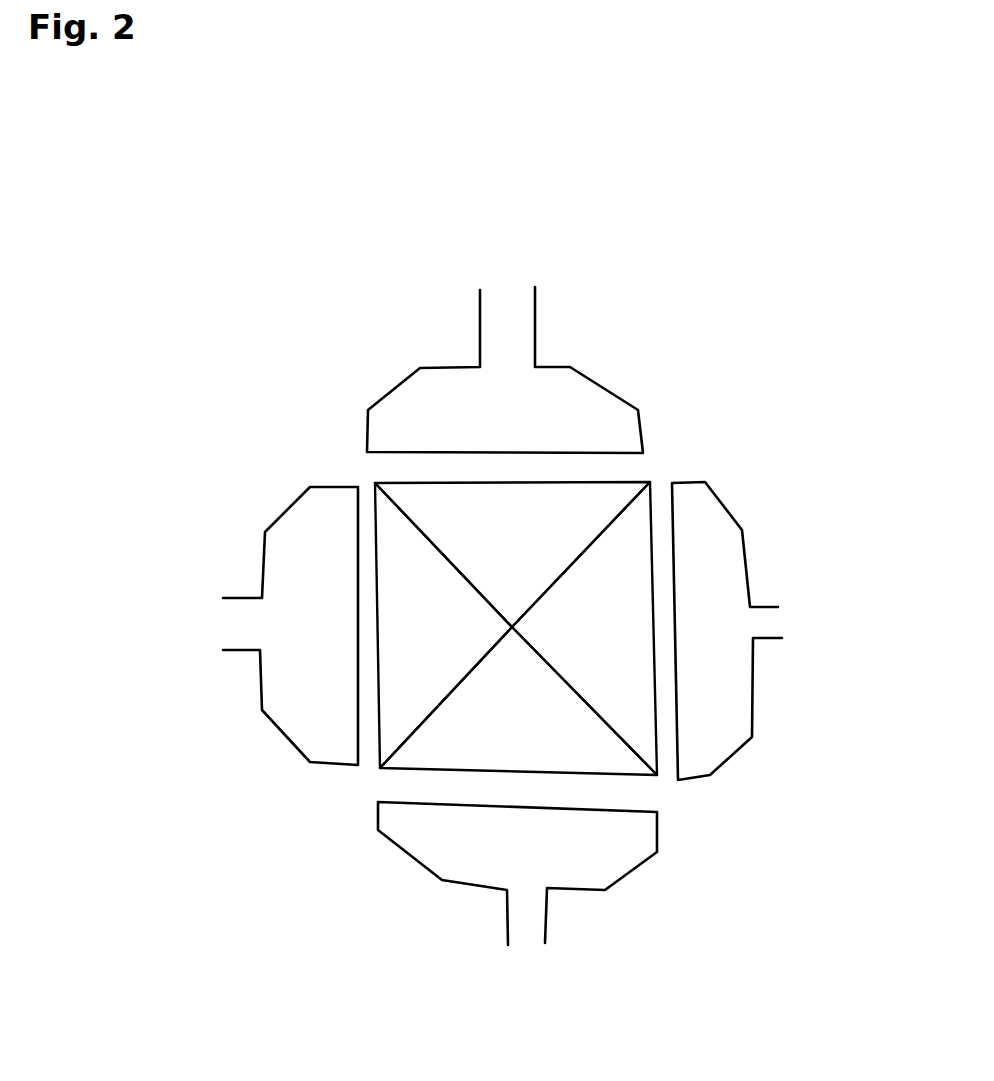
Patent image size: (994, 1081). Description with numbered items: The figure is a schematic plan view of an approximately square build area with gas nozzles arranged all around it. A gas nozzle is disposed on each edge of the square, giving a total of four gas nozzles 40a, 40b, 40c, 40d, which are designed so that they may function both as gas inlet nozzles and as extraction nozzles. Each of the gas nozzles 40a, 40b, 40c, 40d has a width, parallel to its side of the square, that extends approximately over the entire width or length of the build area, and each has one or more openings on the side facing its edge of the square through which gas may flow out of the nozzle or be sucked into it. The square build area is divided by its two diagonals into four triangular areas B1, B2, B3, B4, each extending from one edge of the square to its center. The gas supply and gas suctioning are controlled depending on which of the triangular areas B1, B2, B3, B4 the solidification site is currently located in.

The gas nozzle 40a is at (577, 395).
The gas nozzle 40b is at (710, 527).
The gas nozzle 40c is at (620, 864).
The gas nozzle 40d is at (310, 723).
The triangular area B1 is at (512, 554).
The triangular area B2 is at (584, 628).
The triangular area B3 is at (518, 701).
The triangular area B4 is at (443, 625).